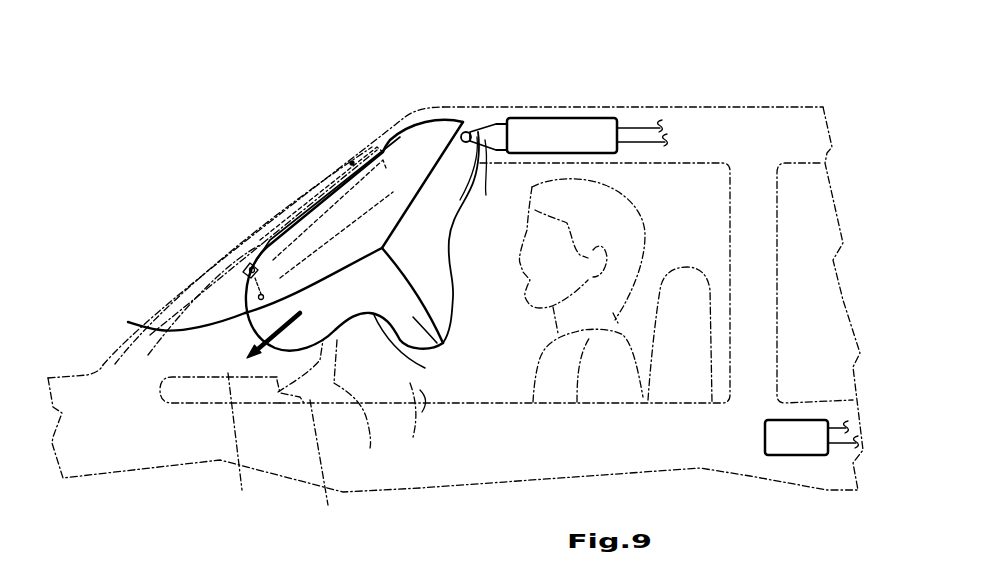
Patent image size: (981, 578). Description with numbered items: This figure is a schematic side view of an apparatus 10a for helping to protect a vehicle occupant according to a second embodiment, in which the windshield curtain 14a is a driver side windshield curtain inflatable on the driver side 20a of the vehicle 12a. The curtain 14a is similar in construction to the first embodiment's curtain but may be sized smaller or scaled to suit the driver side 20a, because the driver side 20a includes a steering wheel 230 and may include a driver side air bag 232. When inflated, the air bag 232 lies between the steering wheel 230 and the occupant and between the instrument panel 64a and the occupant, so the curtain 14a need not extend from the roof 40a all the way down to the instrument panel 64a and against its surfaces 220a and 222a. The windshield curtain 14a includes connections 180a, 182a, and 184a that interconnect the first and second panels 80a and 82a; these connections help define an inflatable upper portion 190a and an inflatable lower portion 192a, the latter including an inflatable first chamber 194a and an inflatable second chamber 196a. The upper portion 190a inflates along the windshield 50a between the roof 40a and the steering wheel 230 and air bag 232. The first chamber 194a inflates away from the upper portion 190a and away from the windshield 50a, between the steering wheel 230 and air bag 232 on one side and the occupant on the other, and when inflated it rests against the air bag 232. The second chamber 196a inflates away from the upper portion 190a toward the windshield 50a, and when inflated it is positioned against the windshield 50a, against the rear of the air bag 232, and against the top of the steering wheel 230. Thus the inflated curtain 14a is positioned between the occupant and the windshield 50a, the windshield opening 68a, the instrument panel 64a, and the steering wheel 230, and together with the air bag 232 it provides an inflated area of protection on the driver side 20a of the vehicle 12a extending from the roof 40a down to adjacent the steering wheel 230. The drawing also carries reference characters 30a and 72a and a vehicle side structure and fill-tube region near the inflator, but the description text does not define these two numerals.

The apparatus 10a is at (294, 113).
The vehicle 12a is at (355, 61).
The windshield curtain 14a is at (437, 218).
The driver side 20a is at (514, 395).
The side structure of vehicle 30a is at (243, 295).
The roof 40a is at (747, 123).
The windshield 50a is at (226, 264).
The instrument panel 64a is at (197, 387).
The windshield opening 68a is at (308, 166).
The fill tube 72a is at (486, 195).
The first panel 80a is at (453, 287).
The second panel 82a is at (328, 220).
The connection 180a is at (430, 300).
The connection 182a is at (357, 262).
The connection 184a is at (412, 195).
The inflatable upper portion 190a is at (430, 143).
The inflatable lower portion 192a is at (417, 367).
The inflatable first chamber 194a is at (437, 343).
The inflatable second chamber 196a is at (158, 321).
The surface of the instrument panel 220a is at (253, 448).
The surface of the instrument panel 222a is at (335, 468).
The steering wheel 230 is at (360, 429).
The driver side air bag 232 is at (413, 419).